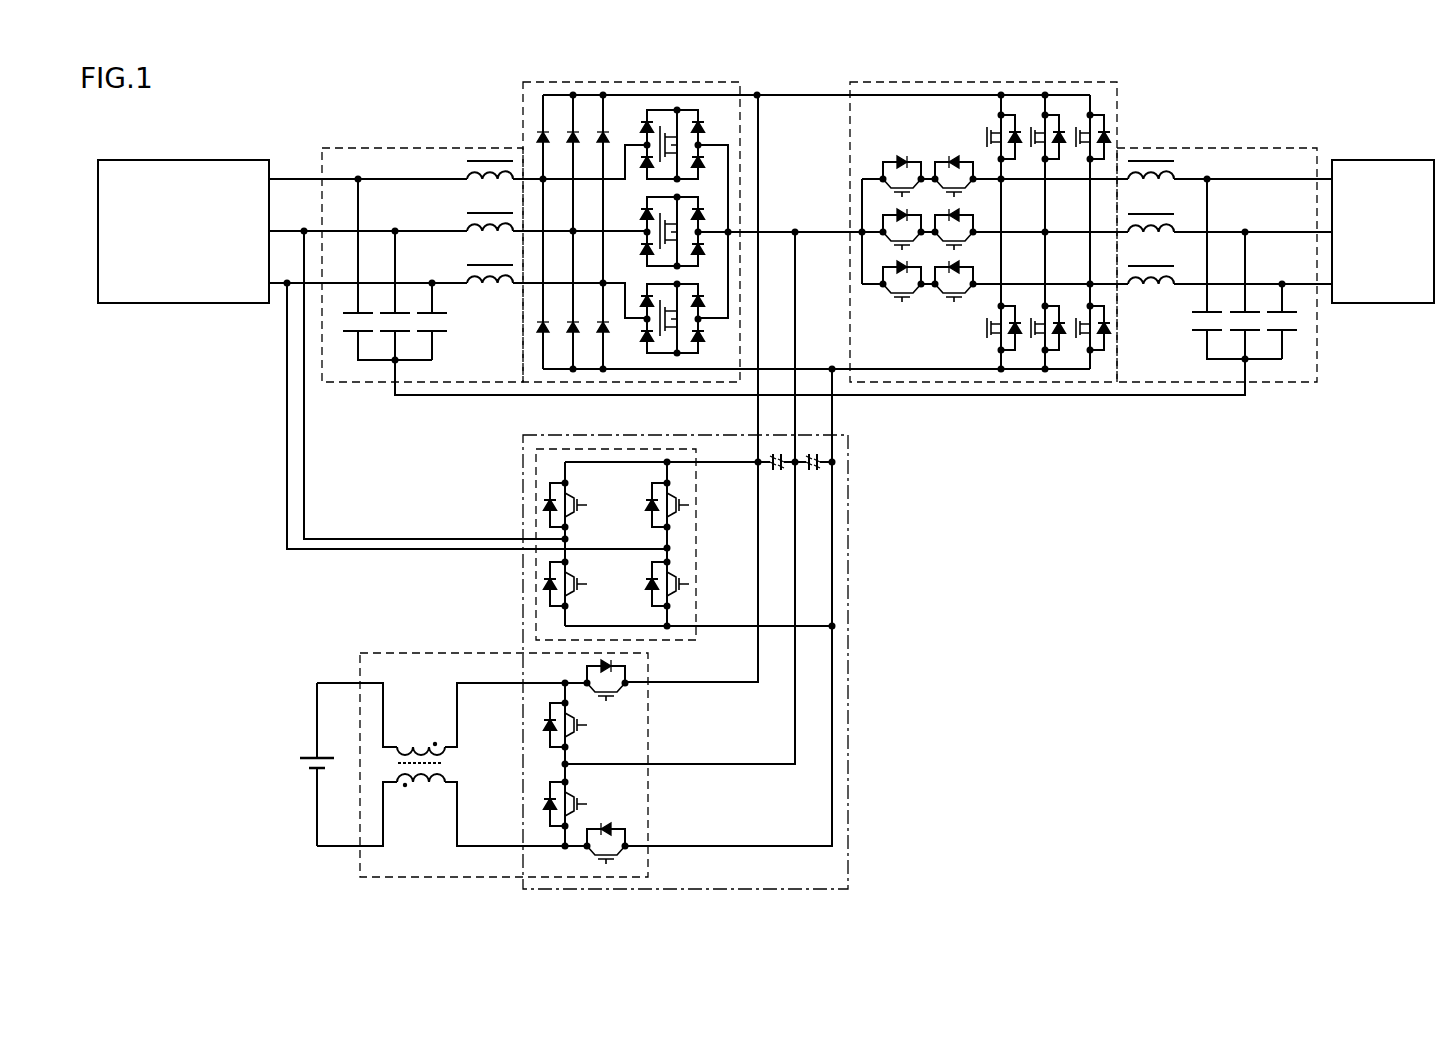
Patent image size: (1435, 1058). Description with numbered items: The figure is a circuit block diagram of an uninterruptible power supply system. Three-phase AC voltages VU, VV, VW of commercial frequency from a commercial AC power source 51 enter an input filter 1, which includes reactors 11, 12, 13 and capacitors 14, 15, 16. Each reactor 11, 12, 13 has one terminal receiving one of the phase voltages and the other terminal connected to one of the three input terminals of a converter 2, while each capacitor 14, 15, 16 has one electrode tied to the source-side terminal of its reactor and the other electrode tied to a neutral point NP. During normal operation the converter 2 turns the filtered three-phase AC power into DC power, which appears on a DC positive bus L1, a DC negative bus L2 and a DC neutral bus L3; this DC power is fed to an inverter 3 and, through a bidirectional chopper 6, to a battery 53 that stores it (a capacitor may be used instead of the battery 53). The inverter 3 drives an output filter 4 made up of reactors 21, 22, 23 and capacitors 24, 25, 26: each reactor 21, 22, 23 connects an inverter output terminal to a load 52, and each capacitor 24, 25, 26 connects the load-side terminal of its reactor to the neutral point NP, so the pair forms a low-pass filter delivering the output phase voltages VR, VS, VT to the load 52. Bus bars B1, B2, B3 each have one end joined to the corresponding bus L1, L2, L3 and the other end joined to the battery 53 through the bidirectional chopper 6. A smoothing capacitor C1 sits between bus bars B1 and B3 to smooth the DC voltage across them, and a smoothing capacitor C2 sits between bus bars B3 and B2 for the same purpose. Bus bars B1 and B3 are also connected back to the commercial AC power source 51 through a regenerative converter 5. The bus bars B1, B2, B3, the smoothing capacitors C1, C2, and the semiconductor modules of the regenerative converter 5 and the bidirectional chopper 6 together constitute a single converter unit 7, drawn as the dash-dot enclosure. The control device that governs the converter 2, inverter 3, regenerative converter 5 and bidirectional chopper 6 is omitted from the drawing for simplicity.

The input filter 1 is at (386, 148).
The converter 2 is at (521, 106).
The inverter 3 is at (1118, 106).
The output filter 4 is at (1254, 148).
The regenerative converter 5 is at (697, 598).
The bidirectional chopper 6 is at (422, 653).
The converter unit 7 is at (850, 660).
The reactor 11 is at (488, 183).
The reactor 12 is at (488, 236).
The reactor 13 is at (492, 290).
The capacitor 14 is at (352, 333).
The capacitor 15 is at (388, 335).
The capacitor 16 is at (445, 335).
The reactor 21 is at (1153, 183).
The reactor 22 is at (1153, 236).
The reactor 23 is at (1150, 291).
The capacitor 24 is at (1200, 334).
The capacitor 25 is at (1253, 334).
The capacitor 26 is at (1290, 334).
The commercial AC power source 51 is at (187, 160).
The load 52 is at (1392, 160).
The battery 53 is at (312, 755).
The DC positive bus L1 is at (788, 95).
The DC negative bus L2 is at (813, 367).
The DC neutral bus L3 is at (813, 230).
The bus bar B1 is at (758, 413).
The bus bar B2 is at (832, 408).
The bus bar B3 is at (796, 413).
The smoothing capacitor C1 is at (777, 472).
The smoothing capacitor C2 is at (814, 472).
The neutral point NP is at (423, 397).
The three-phase AC voltage VU is at (358, 169).
The three-phase AC voltage VV is at (393, 221).
The three-phase AC voltage VW is at (431, 273).
The output voltage VR is at (1205, 168).
The output voltage VS is at (1242, 221).
The output voltage VT is at (1280, 273).